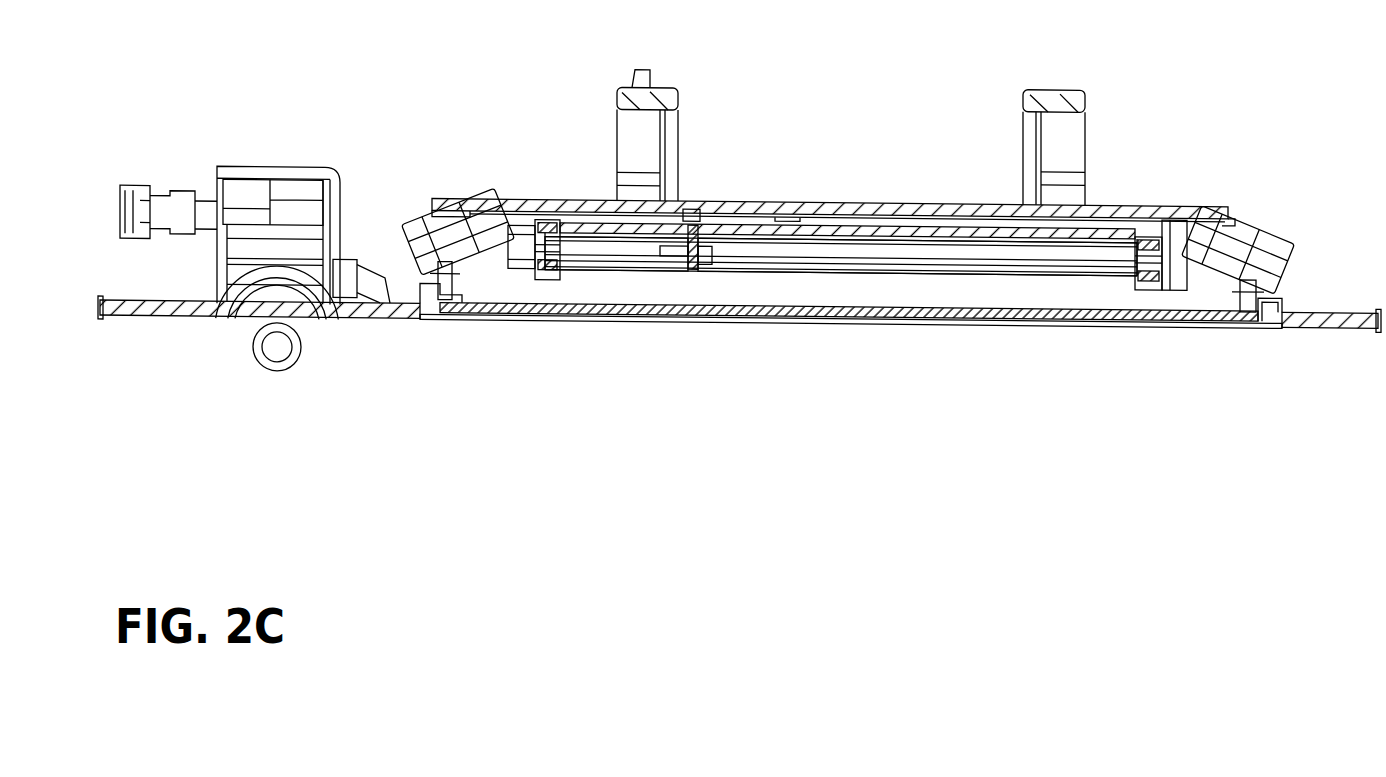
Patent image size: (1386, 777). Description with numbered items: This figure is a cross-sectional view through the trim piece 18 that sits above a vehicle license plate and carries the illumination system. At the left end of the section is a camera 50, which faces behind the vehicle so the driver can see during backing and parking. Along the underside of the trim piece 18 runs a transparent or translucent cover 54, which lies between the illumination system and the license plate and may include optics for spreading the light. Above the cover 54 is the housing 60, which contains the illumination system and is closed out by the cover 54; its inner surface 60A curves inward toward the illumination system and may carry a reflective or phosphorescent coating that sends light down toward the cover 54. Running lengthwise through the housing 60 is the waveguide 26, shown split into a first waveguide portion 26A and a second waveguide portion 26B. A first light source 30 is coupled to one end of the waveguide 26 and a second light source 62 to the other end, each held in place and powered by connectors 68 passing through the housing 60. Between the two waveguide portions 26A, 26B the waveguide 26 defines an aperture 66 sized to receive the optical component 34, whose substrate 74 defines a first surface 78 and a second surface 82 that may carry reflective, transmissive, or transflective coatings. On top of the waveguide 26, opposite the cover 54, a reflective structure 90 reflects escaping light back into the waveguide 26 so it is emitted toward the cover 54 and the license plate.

The trim piece 18 is at (448, 330).
The waveguide 26 is at (906, 276).
The first waveguide portion 26A is at (593, 248).
The second waveguide portion 26B is at (973, 258).
The first light source 30 is at (518, 252).
The optical component 34 is at (689, 280).
The camera 50 is at (220, 373).
The cover 54 is at (805, 313).
The housing 60 is at (757, 200).
The inner surface 60A is at (801, 214).
The second light source 62 is at (1178, 265).
The aperture 66 is at (548, 228).
The connectors 68 is at (453, 203).
The substrate 74 is at (699, 205).
The first surface 78 is at (672, 248).
The second surface 82 is at (714, 252).
The reflective structure 90 is at (595, 225).